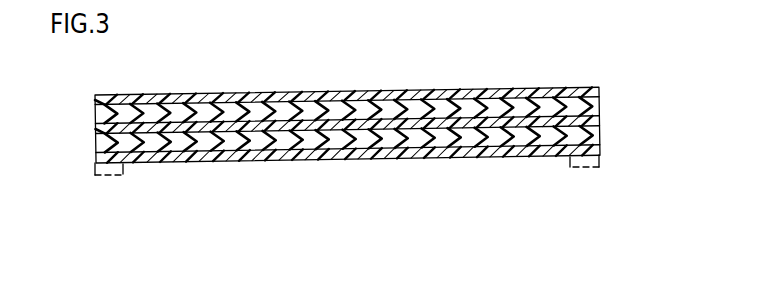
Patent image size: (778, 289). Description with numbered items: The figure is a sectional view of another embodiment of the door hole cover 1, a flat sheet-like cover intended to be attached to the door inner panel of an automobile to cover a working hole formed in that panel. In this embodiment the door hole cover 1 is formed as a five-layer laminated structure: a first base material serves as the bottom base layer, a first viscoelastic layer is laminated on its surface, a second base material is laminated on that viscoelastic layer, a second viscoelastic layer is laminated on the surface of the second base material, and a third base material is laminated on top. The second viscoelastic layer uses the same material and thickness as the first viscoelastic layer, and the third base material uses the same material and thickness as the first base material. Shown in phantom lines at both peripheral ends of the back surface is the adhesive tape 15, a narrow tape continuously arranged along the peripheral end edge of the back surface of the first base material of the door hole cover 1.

The door hole cover 1 is at (360, 258).
The adhesive tape 15 is at (101, 177).